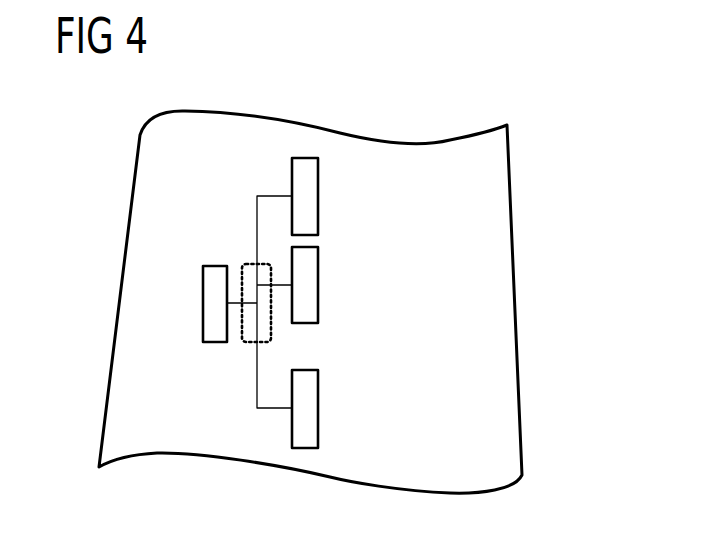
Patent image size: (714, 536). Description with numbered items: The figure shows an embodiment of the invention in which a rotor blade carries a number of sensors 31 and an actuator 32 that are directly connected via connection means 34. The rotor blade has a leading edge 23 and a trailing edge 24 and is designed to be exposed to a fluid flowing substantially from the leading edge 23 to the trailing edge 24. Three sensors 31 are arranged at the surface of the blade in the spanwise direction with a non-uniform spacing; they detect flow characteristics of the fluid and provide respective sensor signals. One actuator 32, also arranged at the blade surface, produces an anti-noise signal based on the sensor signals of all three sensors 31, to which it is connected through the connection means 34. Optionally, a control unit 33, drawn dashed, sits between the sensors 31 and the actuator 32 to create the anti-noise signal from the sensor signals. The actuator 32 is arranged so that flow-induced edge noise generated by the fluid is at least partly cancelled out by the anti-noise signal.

The leading edge 23 is at (516, 300).
The trailing edge 24 is at (116, 294).
The sensors 31 is at (318, 196).
The actuator 32 is at (203, 302).
The control unit 33 is at (271, 333).
The connection means 34 is at (257, 218).